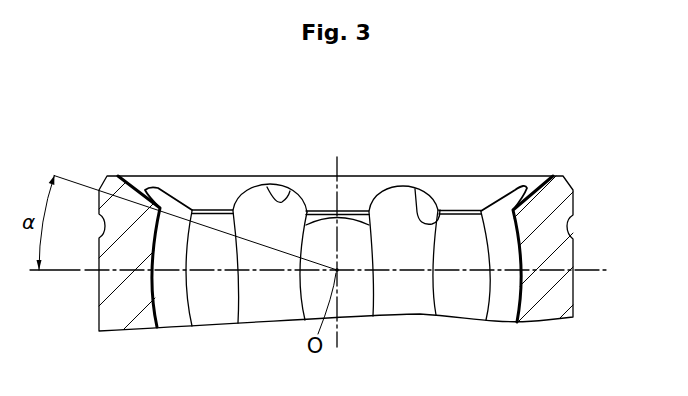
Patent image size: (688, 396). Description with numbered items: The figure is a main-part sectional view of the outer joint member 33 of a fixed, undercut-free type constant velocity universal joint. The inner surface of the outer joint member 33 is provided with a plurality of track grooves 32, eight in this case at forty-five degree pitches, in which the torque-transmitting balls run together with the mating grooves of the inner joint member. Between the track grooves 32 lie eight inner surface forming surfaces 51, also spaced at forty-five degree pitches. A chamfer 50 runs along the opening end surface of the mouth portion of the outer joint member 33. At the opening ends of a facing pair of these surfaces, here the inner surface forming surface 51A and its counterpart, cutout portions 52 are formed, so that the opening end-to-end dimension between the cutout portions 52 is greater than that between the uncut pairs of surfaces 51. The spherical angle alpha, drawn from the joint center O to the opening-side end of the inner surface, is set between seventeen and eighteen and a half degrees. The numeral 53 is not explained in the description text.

The track groove 32 is at (267, 187).
The outer joint member 33 is at (493, 161).
The chamfer 50 is at (213, 184).
The inner surface forming surface 51 is at (214, 308).
The inner surface forming surface 51A is at (361, 298).
The cutout portion 52 is at (353, 211).
The shoulder recess 53 is at (163, 190).